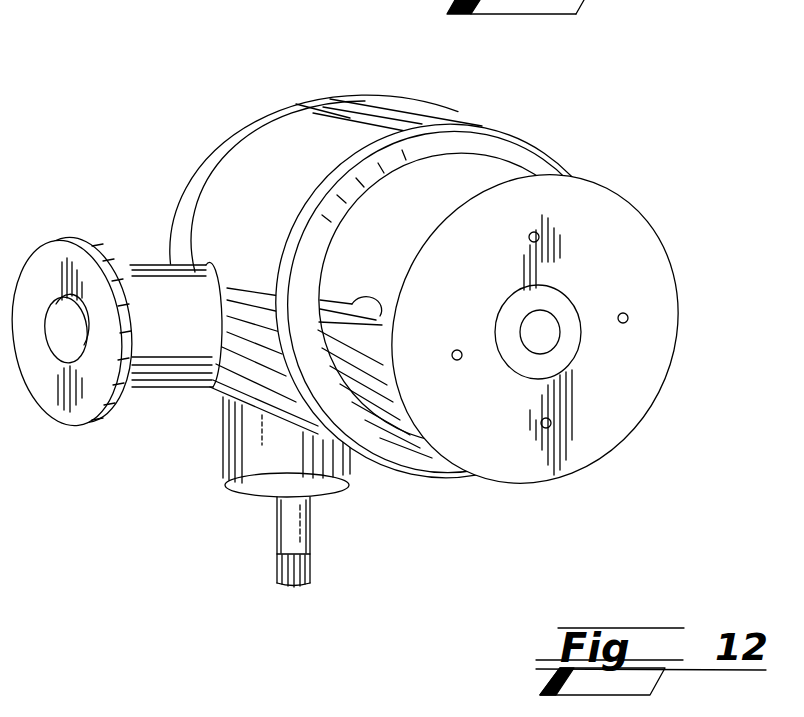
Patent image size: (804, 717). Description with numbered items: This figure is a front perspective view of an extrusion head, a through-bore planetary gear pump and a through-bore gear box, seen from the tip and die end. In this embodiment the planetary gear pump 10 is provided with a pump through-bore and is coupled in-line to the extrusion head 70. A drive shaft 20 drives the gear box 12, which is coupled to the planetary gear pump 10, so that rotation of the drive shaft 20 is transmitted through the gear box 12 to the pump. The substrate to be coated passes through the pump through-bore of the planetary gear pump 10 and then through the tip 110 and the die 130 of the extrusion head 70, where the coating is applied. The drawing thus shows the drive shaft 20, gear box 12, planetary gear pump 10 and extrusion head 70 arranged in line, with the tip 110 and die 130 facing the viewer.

The planetary gear pump 10 is at (405, 117).
The gear box 12 is at (228, 155).
The drive shaft 20 is at (283, 540).
The extrusion head 70 is at (482, 160).
The tip 110 is at (560, 331).
The die 130 is at (556, 305).